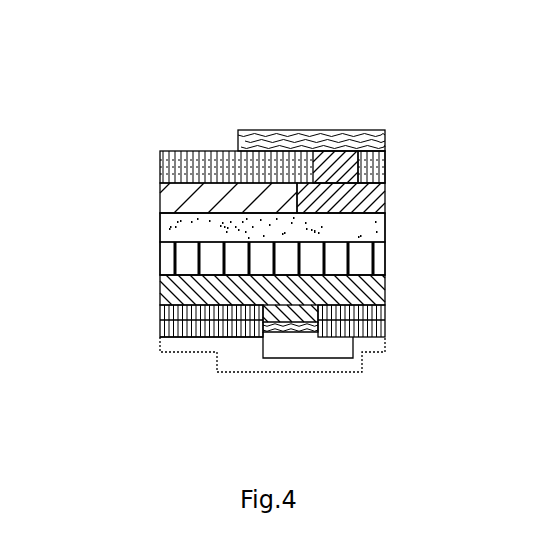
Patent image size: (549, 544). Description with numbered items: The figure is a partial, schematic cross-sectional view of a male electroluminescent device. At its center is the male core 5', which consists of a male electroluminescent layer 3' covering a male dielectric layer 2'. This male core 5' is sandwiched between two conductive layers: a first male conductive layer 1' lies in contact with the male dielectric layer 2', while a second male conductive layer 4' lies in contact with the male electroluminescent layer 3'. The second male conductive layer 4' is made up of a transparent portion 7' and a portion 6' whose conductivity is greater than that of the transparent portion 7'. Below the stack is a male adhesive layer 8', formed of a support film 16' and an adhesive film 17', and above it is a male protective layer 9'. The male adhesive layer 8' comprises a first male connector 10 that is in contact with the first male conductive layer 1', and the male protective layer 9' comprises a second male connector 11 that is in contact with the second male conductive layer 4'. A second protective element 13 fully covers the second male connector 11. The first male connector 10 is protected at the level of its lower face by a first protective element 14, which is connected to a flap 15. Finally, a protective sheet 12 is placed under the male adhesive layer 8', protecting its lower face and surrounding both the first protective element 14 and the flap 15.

The first male conductive layer 1' is at (312, 290).
The male dielectric layer 2' is at (308, 256).
The male electroluminescent layer 3' is at (312, 216).
The second male conductive layer 4' is at (381, 180).
The male core 5' is at (247, 245).
The portion of greater conductivity 6' is at (312, 147).
The transparent portion 7' is at (170, 130).
The male adhesive layer 8' is at (368, 324).
The male protective layer 9' is at (391, 117).
The first male connector 10 is at (318, 338).
The second male connector 11 is at (328, 160).
The protective sheet 12 is at (394, 350).
The second protective element 13 is at (353, 130).
The first protective element 14 is at (285, 334).
The flap 15 is at (290, 352).
The support film 16' is at (166, 315).
The adhesive film 17' is at (173, 329).